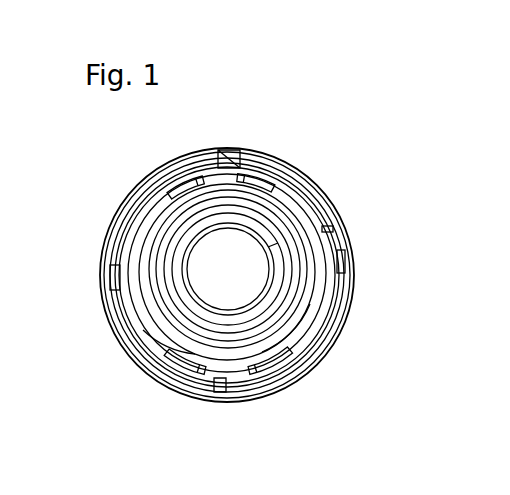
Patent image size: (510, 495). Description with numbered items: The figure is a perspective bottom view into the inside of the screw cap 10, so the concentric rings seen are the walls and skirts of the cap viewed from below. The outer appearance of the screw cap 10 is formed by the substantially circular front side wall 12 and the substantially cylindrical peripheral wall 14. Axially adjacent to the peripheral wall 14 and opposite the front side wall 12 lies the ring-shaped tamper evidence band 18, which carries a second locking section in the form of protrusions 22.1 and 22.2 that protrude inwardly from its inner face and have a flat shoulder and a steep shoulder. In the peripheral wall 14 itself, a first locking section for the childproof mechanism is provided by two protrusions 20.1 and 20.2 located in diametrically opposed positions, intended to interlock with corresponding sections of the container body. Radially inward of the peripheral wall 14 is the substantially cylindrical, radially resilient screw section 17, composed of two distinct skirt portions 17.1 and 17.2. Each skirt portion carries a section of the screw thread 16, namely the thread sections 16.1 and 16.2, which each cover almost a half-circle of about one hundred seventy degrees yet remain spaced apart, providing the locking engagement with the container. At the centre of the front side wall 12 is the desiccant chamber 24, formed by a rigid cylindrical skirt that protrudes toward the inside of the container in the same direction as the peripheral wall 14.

The screw cap 10 is at (317, 143).
The front side wall 12 is at (303, 286).
The peripheral wall 14 is at (317, 171).
The screw thread 16 is at (140, 233).
The thread section 16.1 is at (290, 338).
The thread section 16.2 is at (143, 330).
The screw section 17 is at (153, 192).
The skirt portion 17.1 is at (272, 370).
The skirt portion 17.2 is at (199, 378).
The tamper evidence band 18 is at (348, 307).
The protrusion 20.1 is at (230, 382).
The protrusion 20.2 is at (224, 160).
The protrusion 22.1 is at (345, 268).
The protrusion 22.2 is at (110, 275).
The desiccant chamber 24 is at (197, 258).